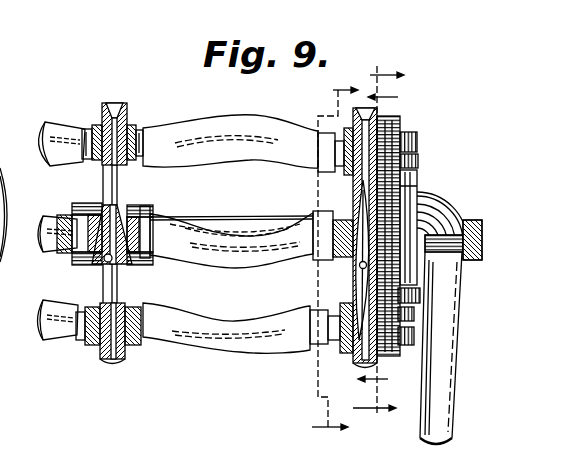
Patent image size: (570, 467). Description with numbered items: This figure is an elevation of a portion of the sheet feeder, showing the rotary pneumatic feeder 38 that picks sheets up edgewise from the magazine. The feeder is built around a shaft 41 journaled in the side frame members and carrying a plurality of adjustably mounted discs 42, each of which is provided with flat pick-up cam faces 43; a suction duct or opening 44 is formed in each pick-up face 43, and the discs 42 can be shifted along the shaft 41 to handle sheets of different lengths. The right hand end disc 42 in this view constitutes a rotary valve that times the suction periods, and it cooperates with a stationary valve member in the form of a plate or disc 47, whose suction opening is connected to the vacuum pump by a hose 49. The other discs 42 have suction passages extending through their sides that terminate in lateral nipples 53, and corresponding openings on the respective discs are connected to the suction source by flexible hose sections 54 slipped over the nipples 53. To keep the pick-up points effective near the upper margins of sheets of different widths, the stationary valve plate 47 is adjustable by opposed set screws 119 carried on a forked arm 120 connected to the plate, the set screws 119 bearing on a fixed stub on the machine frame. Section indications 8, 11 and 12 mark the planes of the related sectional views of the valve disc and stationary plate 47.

The section line 8- 8 is at (335, 267).
The section line 11- 11 is at (393, 237).
The section line 12- 12 is at (380, 244).
The rotary feeder 38 is at (102, 106).
The shaft 41 is at (262, 210).
The disc 42 is at (105, 358).
The pick-up cam face 43 is at (88, 266).
The suction opening 44 is at (355, 220).
The stationary valve plate 47 is at (382, 124).
The hose 49 is at (422, 444).
The lateral nipple 53 is at (89, 130).
The flexible hose section 54 is at (249, 126).
The set screw 119 is at (416, 146).
The forked arm 120 is at (421, 180).